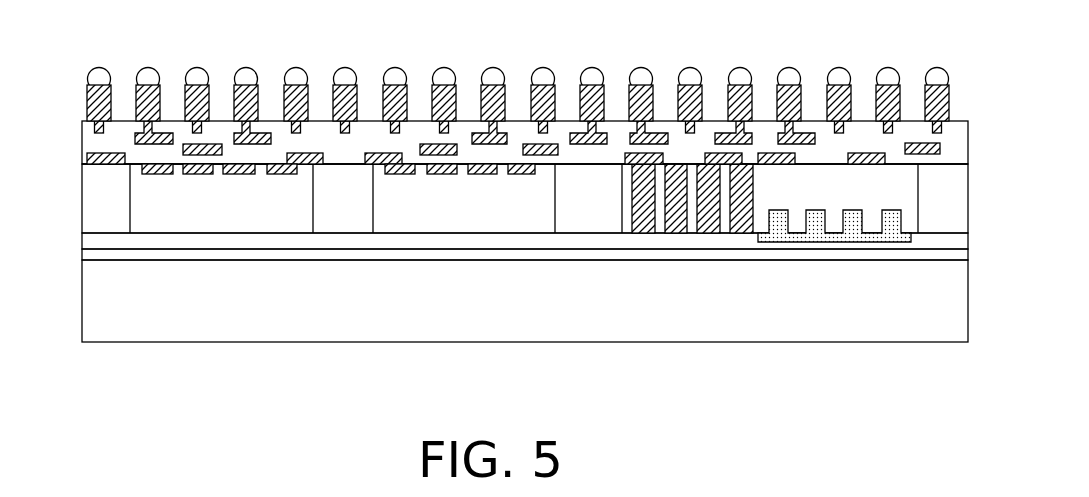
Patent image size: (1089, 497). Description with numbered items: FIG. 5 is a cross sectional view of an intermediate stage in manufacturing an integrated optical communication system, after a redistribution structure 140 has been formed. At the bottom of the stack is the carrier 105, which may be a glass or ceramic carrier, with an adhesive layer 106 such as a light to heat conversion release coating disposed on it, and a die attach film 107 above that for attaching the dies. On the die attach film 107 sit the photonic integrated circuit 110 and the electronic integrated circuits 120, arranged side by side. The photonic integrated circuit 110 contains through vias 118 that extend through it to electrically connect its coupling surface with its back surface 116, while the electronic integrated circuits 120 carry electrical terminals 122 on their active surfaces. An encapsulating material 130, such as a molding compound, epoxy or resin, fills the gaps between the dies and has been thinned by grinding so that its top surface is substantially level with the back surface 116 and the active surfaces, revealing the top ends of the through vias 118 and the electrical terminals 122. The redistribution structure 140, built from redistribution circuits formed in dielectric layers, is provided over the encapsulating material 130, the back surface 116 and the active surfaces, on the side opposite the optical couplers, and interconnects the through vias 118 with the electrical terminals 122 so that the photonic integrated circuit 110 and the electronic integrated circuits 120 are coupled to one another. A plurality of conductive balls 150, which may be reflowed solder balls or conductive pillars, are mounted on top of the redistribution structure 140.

The carrier 105 is at (962, 324).
The adhesive layer 106 is at (962, 257).
The die attach film 107 is at (960, 241).
The photonic integrated circuit 110 is at (908, 190).
The back surface 116 is at (829, 163).
The through vias 118 is at (678, 165).
The electronic integrated circuit 120 is at (263, 218).
The electrical terminals 122 is at (474, 165).
The encapsulating material 130 is at (960, 197).
The redistribution structure 140 is at (962, 137).
The conductive balls 150 is at (947, 73).